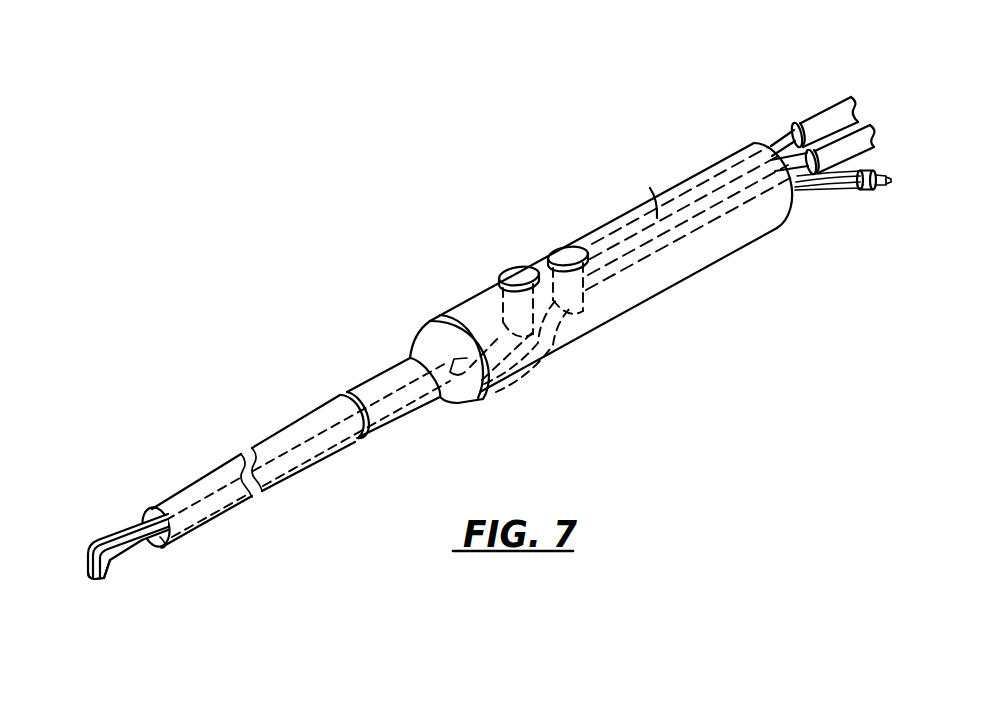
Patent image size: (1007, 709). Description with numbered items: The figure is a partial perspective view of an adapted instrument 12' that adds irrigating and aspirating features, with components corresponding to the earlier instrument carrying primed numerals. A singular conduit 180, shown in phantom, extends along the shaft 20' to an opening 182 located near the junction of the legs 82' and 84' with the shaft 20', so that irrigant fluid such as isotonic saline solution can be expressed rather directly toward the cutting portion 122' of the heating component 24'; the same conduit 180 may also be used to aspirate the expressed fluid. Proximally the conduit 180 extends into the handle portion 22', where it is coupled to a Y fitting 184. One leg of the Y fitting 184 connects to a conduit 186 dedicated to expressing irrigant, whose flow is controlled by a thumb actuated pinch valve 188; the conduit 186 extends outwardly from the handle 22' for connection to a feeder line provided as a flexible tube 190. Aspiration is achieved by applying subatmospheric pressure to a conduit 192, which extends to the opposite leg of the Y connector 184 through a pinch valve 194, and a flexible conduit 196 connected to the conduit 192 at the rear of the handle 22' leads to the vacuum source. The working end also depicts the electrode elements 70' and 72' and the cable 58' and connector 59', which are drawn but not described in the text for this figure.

The instrument 12' is at (473, 346).
The shaft 20' is at (256, 492).
The handle portion 22' is at (673, 223).
The heating component 24' is at (113, 552).
The cutting electrode 70' is at (117, 521).
The coagulating electrode 72' is at (127, 614).
The leg 82' is at (140, 509).
The leg 84' is at (148, 573).
The cutting portion 122' is at (78, 607).
The conduit 180 is at (284, 463).
The opening 182 is at (158, 541).
The Y fitting 184 is at (510, 378).
The conduit 186 is at (560, 348).
The pinch valve 188 is at (563, 252).
The flexible tube 190 is at (870, 128).
The conduit 192 is at (650, 188).
The pinch valve 194 is at (517, 278).
The flexible conduit 196 is at (831, 112).
The cable 58' is at (856, 189).
The connector 59' is at (834, 203).